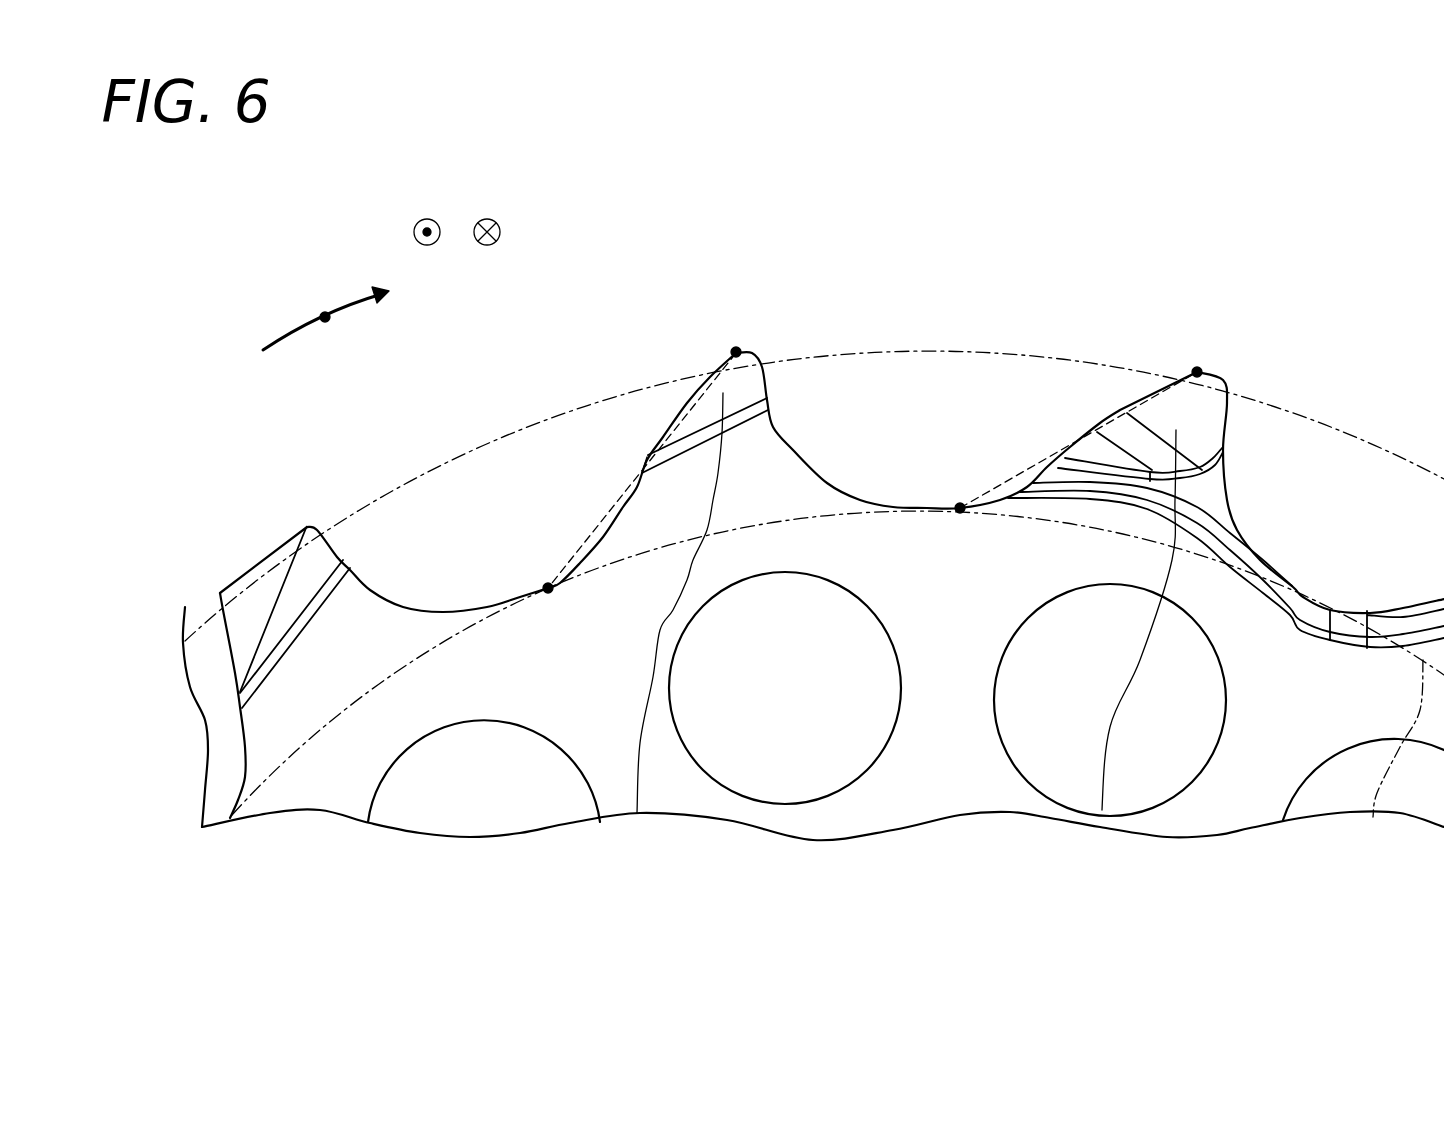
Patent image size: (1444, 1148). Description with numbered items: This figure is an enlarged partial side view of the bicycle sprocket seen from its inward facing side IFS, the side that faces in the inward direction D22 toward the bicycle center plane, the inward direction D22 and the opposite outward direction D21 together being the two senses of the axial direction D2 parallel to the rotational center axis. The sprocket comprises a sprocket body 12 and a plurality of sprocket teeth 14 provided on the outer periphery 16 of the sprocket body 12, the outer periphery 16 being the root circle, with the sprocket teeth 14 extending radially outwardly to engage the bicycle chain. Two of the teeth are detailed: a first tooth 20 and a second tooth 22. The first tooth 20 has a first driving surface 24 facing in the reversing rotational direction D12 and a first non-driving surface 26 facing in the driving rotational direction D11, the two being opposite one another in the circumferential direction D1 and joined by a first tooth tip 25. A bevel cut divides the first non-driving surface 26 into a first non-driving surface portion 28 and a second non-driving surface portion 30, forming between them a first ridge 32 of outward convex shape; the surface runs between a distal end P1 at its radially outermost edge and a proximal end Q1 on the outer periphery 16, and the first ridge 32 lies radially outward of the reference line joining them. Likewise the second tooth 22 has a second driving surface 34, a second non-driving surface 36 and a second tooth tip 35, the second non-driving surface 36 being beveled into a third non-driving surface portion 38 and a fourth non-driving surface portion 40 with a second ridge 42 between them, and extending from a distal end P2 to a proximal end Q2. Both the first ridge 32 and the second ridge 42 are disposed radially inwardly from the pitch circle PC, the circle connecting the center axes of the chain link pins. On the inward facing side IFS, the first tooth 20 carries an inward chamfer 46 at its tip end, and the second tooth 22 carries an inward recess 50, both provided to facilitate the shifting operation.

The sprocket body 12 is at (813, 749).
The sprocket teeth 14 is at (270, 537).
The outer periphery 16 is at (1373, 817).
The first tooth 20 is at (754, 384).
The second tooth 22 is at (1202, 414).
The first driving surface 24 is at (795, 447).
The first tooth tip 25 is at (738, 312).
The first non-driving surface 26 is at (658, 406).
The first non-driving surface portion 28 is at (685, 400).
The second non-driving surface portion 30 is at (620, 500).
The first ridge 32 is at (656, 443).
The second driving surface 34 is at (1232, 433).
The second tooth tip 35 is at (1201, 313).
The second non-driving surface 36 is at (1202, 436).
The third non-driving surface portion 38 is at (1164, 335).
The fourth non-driving surface portion 40 is at (1042, 462).
The second ridge 42 is at (1103, 418).
The inward chamfer 46 is at (637, 813).
The inward recess 50 is at (1102, 810).
The inward facing side IFS is at (942, 788).
The pitch circle PC is at (1320, 400).
The distal end P1 is at (725, 336).
The distal end P2 is at (1190, 357).
The proximal end Q1 is at (547, 568).
The proximal end Q2 is at (955, 525).
The circumferential direction D1 is at (305, 272).
The driving rotational direction D11 is at (287, 323).
The reversing rotational direction D12 is at (321, 269).
The axial direction D2 is at (436, 175).
The outward direction D21 is at (466, 197).
The inward direction D22 is at (427, 217).